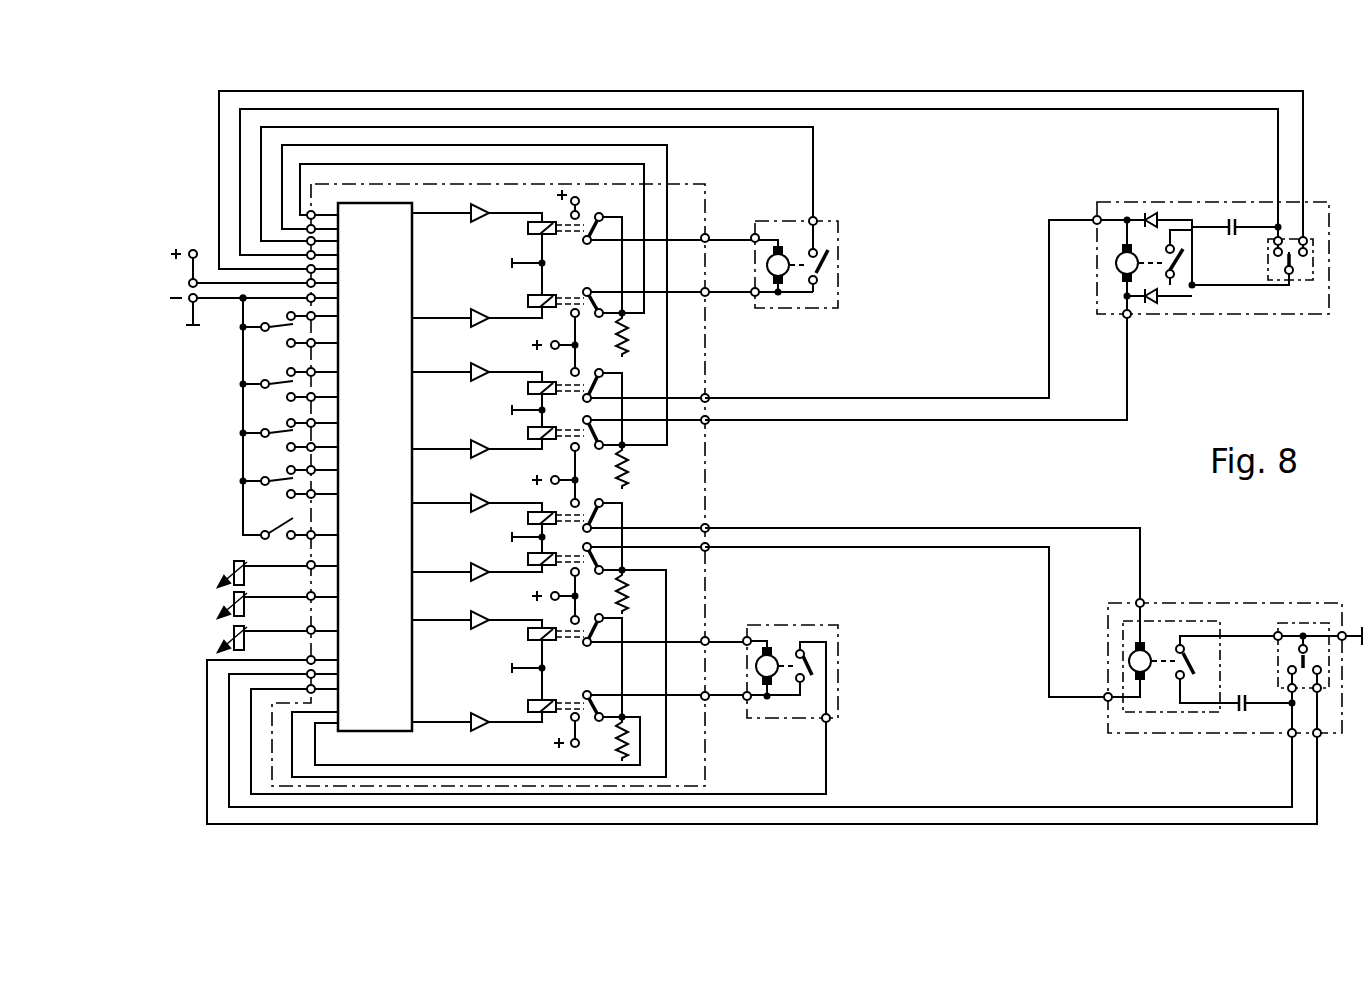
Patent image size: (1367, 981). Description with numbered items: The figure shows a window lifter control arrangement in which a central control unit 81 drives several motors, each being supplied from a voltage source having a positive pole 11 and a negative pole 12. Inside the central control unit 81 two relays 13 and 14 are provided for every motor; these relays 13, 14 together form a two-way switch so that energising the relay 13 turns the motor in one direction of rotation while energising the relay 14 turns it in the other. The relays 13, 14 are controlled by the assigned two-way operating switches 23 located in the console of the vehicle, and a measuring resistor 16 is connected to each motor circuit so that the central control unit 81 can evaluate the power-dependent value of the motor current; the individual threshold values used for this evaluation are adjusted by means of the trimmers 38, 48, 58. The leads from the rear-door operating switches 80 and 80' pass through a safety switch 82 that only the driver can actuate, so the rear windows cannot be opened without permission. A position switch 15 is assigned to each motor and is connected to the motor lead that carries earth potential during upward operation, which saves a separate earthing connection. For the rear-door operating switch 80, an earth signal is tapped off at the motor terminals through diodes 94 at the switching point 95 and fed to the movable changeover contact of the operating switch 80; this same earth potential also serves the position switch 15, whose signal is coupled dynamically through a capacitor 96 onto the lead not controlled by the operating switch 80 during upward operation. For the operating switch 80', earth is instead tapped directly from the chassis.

The positive pole 11 is at (203, 268).
The negative pole 12 is at (186, 317).
The relay 13 is at (553, 222).
The relay 14 is at (553, 294).
The position switch 15 is at (828, 268).
The measuring resistor 16 is at (636, 338).
The operating switch 23 is at (268, 415).
The trimmer 38 is at (245, 577).
The trimmer 48 is at (245, 608).
The trimmer 58 is at (245, 642).
The operating switch 80 is at (1211, 278).
The operating switch 80' is at (1233, 649).
The central control unit 81 is at (693, 357).
The safety switch 82 is at (276, 538).
The diode 94 is at (1147, 202).
The switching point 95 is at (1200, 295).
The capacitor 96 is at (1230, 215).